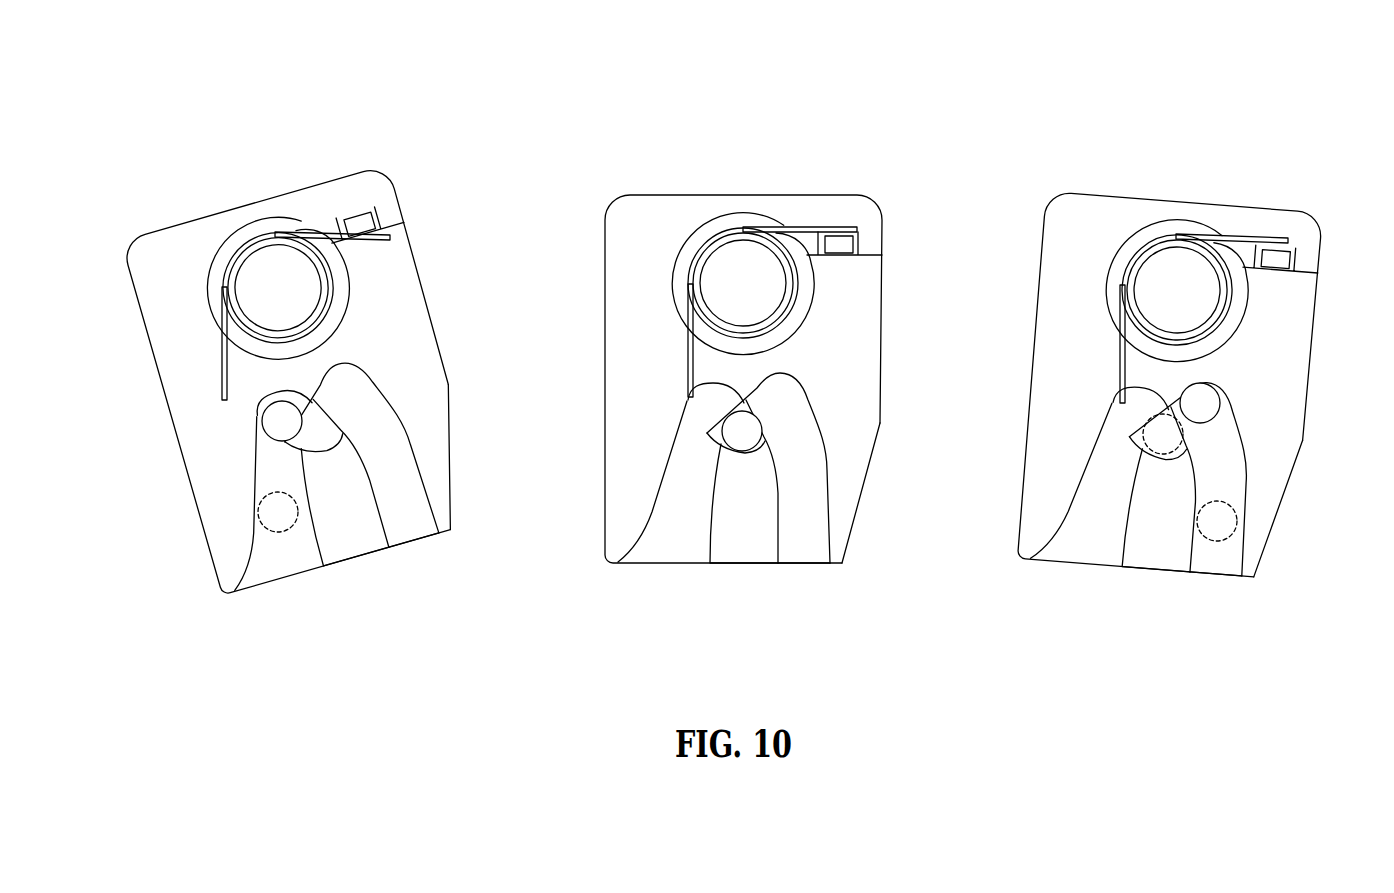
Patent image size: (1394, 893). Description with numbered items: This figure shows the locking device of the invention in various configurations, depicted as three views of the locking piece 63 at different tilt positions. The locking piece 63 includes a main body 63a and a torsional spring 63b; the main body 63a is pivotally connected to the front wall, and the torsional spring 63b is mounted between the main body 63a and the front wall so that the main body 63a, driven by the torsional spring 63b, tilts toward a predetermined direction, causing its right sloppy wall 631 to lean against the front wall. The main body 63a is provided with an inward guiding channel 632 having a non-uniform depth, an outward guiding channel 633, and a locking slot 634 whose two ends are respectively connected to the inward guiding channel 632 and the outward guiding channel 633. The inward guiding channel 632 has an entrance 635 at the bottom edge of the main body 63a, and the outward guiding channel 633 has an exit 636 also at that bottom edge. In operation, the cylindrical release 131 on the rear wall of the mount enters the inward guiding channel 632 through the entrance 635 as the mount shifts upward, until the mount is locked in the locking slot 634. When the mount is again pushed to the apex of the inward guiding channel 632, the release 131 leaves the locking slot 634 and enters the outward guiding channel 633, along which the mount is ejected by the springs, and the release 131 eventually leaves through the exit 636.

The locking piece 63 is at (260, 193).
The main body 63a is at (186, 255).
The torsional spring 63b is at (221, 368).
The cylindrical release 131 is at (265, 422).
The right sloppy wall 631 is at (448, 462).
The inward guiding channel 632 is at (252, 552).
The outward guiding channel 633 is at (362, 413).
The locking slot 634 is at (307, 440).
The entrance 635 is at (280, 580).
The exit 636 is at (405, 535).